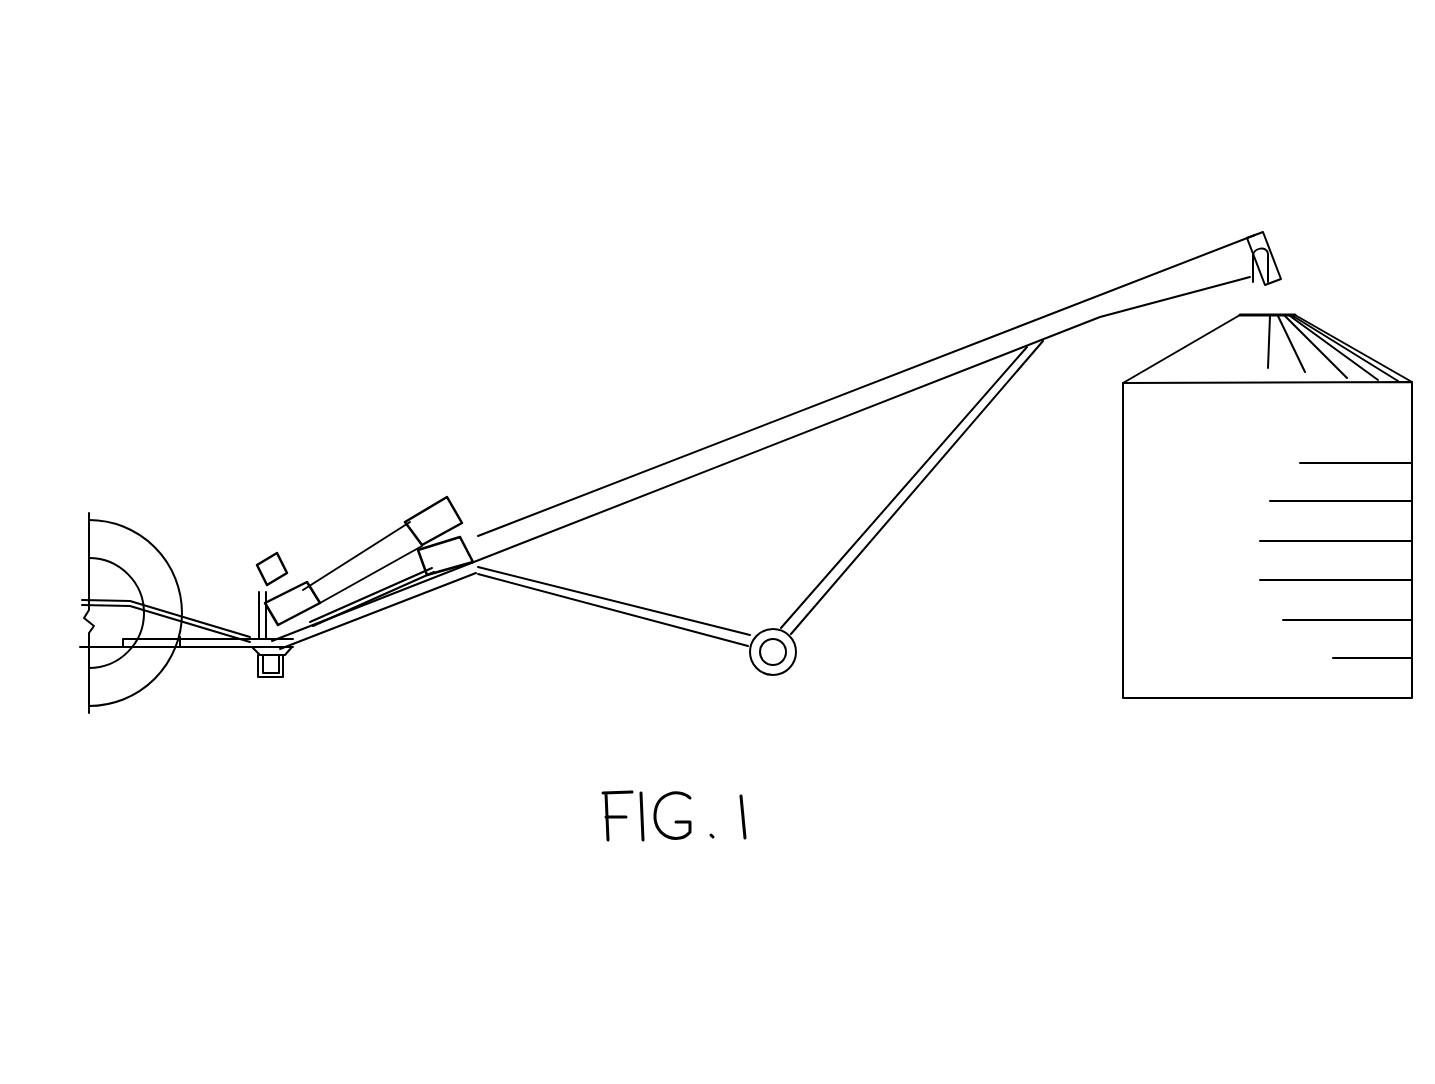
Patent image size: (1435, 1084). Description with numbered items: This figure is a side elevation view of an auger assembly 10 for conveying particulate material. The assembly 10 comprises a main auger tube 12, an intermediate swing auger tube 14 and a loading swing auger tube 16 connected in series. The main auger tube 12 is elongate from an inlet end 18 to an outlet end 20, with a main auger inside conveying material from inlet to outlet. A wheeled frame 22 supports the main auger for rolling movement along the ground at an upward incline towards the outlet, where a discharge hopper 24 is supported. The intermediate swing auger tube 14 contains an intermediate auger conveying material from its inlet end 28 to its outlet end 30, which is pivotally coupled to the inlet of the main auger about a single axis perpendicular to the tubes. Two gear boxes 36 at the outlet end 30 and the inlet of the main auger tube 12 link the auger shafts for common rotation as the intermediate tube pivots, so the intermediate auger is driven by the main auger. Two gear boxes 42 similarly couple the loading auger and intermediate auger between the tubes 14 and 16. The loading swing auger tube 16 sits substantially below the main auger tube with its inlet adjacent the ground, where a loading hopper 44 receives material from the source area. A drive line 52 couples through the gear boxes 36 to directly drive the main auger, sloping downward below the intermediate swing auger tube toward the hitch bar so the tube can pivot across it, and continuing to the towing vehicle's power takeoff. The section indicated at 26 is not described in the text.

The auger assembly 10 is at (492, 230).
The main auger tube 12 is at (752, 427).
The intermediate swing auger tube 14 is at (358, 564).
The loading swing auger tube 16 is at (250, 617).
The inlet end 18 is at (505, 533).
The outlet end 20 is at (1234, 260).
The wheeled frame 22 is at (863, 545).
The discharge hopper 24 is at (1260, 275).
The lower tube section 26 is at (353, 613).
The inlet end 28 is at (312, 585).
The outlet end 30 is at (404, 515).
The gear boxes 36 is at (460, 537).
The gear boxes 42 is at (298, 580).
The loading hopper 44 is at (297, 660).
The drive line 52 is at (210, 640).